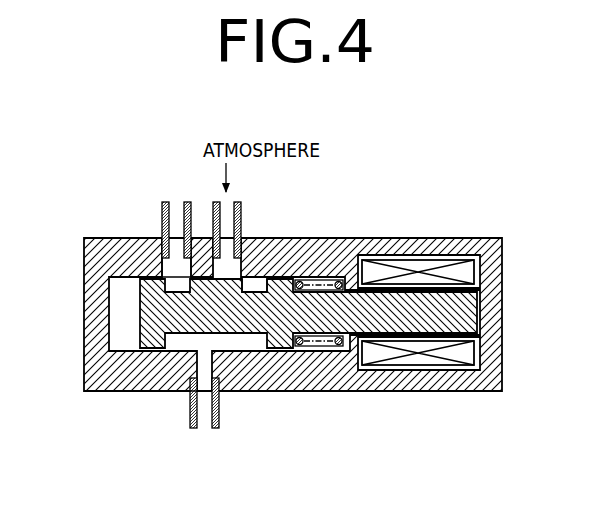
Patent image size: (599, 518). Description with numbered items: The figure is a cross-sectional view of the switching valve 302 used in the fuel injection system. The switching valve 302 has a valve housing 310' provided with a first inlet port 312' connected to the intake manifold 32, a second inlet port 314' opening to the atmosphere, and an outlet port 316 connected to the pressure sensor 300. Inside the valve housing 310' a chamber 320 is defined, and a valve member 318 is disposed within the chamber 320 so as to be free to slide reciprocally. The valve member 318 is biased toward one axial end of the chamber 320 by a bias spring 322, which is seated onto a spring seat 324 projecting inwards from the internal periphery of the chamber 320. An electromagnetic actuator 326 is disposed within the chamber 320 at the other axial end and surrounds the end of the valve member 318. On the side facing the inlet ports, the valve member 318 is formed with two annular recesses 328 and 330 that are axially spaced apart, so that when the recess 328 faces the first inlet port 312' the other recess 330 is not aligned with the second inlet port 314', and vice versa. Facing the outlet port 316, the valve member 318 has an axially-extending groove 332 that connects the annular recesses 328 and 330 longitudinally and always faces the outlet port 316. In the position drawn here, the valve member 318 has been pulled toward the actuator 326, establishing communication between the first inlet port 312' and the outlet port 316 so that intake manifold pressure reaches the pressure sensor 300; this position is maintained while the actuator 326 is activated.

The switching valve 302 is at (397, 226).
The valve member 318 is at (140, 310).
The bias spring 322 is at (320, 277).
The spring seat 324 is at (352, 340).
The electromagnetic actuator 326 is at (463, 273).
The first inlet port 312' is at (146, 227).
The second inlet port 314' is at (252, 240).
The outlet port 316 is at (233, 392).
The annular recess 328 is at (173, 268).
The annular recess 330 is at (263, 268).
The axially-extending groove 332 is at (252, 340).
The valve housing 310' is at (136, 419).
The chamber 320 is at (162, 392).
The intake manifold 32 is at (175, 192).
The pressure sensor 300 is at (203, 438).